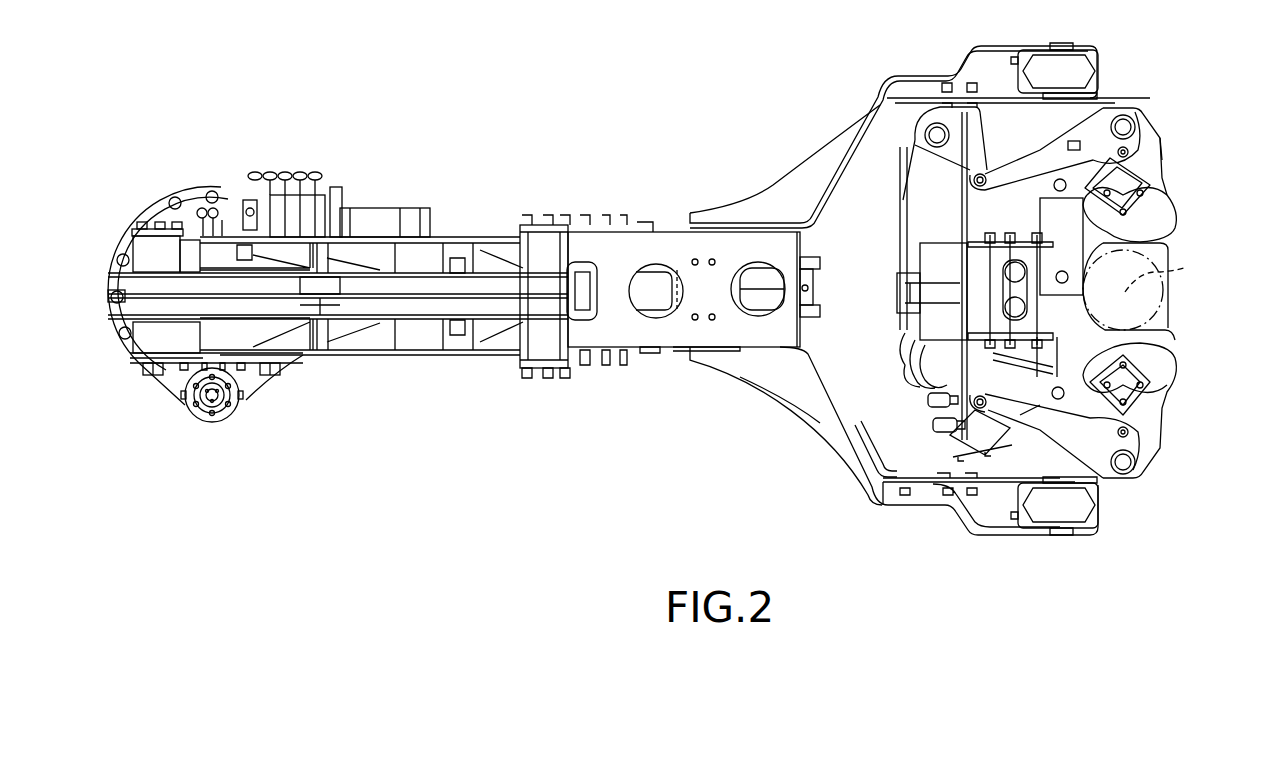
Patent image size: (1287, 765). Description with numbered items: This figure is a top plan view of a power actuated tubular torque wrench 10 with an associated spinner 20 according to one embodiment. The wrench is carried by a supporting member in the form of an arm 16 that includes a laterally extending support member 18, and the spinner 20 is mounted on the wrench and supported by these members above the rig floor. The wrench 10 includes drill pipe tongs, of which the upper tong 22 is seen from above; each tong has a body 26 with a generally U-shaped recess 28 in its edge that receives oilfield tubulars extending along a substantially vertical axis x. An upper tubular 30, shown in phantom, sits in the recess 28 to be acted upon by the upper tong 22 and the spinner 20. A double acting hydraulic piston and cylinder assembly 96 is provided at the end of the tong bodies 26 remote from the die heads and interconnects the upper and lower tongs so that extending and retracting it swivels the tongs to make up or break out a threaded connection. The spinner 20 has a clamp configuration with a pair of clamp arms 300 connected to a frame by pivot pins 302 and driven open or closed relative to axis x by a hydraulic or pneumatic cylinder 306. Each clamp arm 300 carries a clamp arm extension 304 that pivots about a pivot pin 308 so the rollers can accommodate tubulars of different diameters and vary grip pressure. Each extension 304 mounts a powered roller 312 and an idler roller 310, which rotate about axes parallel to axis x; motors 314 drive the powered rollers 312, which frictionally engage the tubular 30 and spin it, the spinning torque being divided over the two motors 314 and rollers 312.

The power actuated tubular torque wrench 10 is at (1163, 108).
The arm 16 is at (457, 350).
The laterally extending support member 18 is at (663, 333).
The spinner 20 is at (1040, 405).
The upper tong 22 is at (1162, 153).
The body 26 is at (858, 383).
The U-shaped recess 28 is at (1147, 322).
The upper tubular 30 is at (1167, 290).
The double acting hydraulic piston and cylinder assembly 96 is at (923, 183).
The clamp arm 300 is at (1013, 177).
The pivot pin 302 is at (858, 150).
The clamp arm extension 304 is at (1137, 163).
The hydraulic or pneumatic cylinder 306 is at (1053, 215).
The pivot pin 308 is at (1123, 114).
The idler roller 310 is at (1147, 212).
The powered roller 312 is at (1167, 230).
The motor 314 is at (1117, 150).